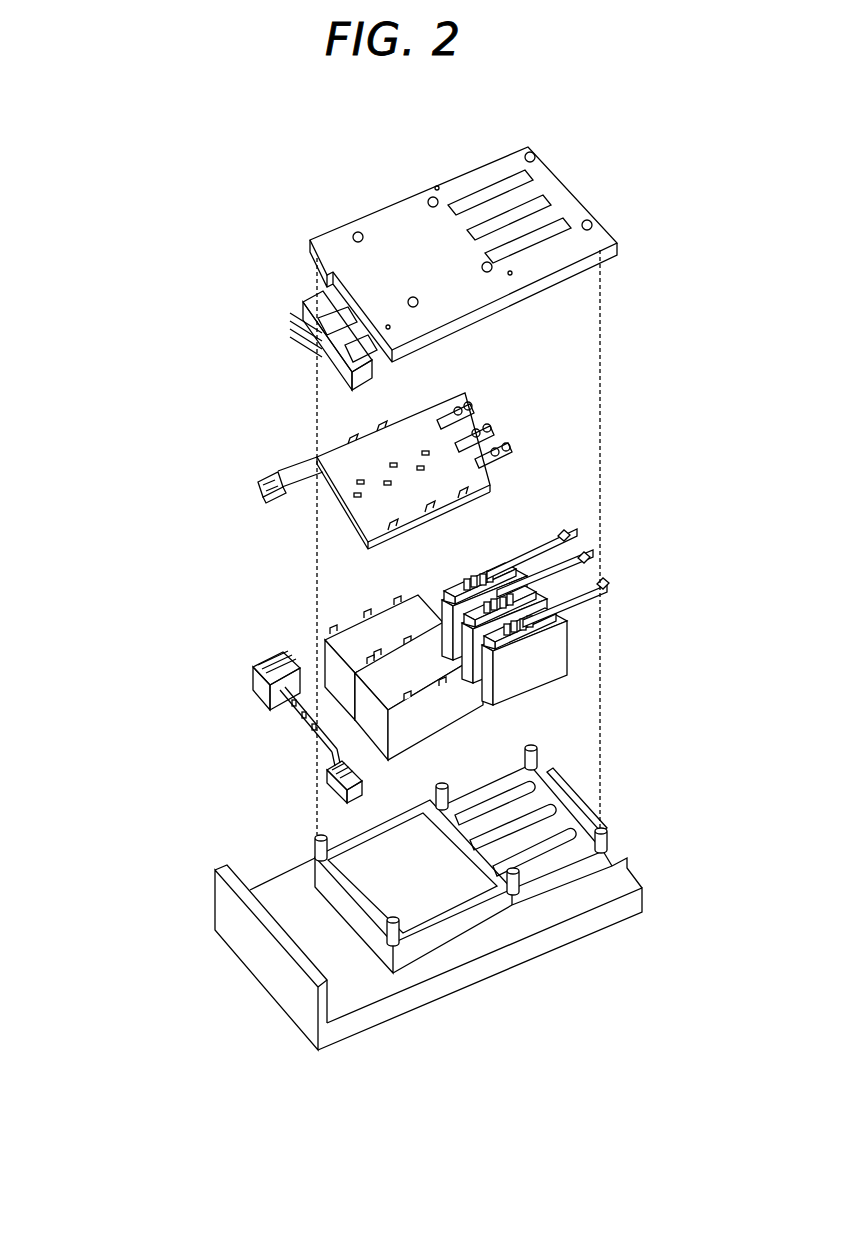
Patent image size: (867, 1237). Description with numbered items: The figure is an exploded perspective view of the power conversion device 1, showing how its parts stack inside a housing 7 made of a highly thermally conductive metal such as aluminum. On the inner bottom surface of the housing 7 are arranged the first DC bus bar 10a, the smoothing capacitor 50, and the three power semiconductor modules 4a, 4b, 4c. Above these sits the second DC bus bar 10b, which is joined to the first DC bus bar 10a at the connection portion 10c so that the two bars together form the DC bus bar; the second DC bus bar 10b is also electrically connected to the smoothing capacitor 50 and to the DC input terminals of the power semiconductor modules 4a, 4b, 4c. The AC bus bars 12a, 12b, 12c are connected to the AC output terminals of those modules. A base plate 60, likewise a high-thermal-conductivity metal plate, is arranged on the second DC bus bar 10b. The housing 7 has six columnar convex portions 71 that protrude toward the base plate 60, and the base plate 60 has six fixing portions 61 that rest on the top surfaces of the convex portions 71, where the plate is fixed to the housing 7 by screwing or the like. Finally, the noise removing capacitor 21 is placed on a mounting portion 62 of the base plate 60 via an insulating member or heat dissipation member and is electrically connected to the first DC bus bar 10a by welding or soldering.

The power conversion device 1 is at (157, 275).
The base plate 60 is at (486, 262).
The fixing portions 61 is at (603, 238).
The mounting portion 62 is at (380, 380).
The noise removing capacitor 21 is at (310, 303).
The second DC bus bar 10b is at (340, 445).
The connection portion 10c is at (260, 487).
The first DC bus bar 10a is at (305, 722).
The AC bus bar 12a is at (567, 532).
The AC bus bar 12b is at (580, 560).
The AC bus bar 12c is at (610, 583).
The power semiconductor module 4a is at (453, 600).
The power semiconductor module 4b is at (560, 610).
The power semiconductor module 4c is at (535, 667).
The smoothing capacitor 50 is at (360, 637).
The housing 7 is at (530, 942).
The columnar convex portions 71 is at (607, 835).